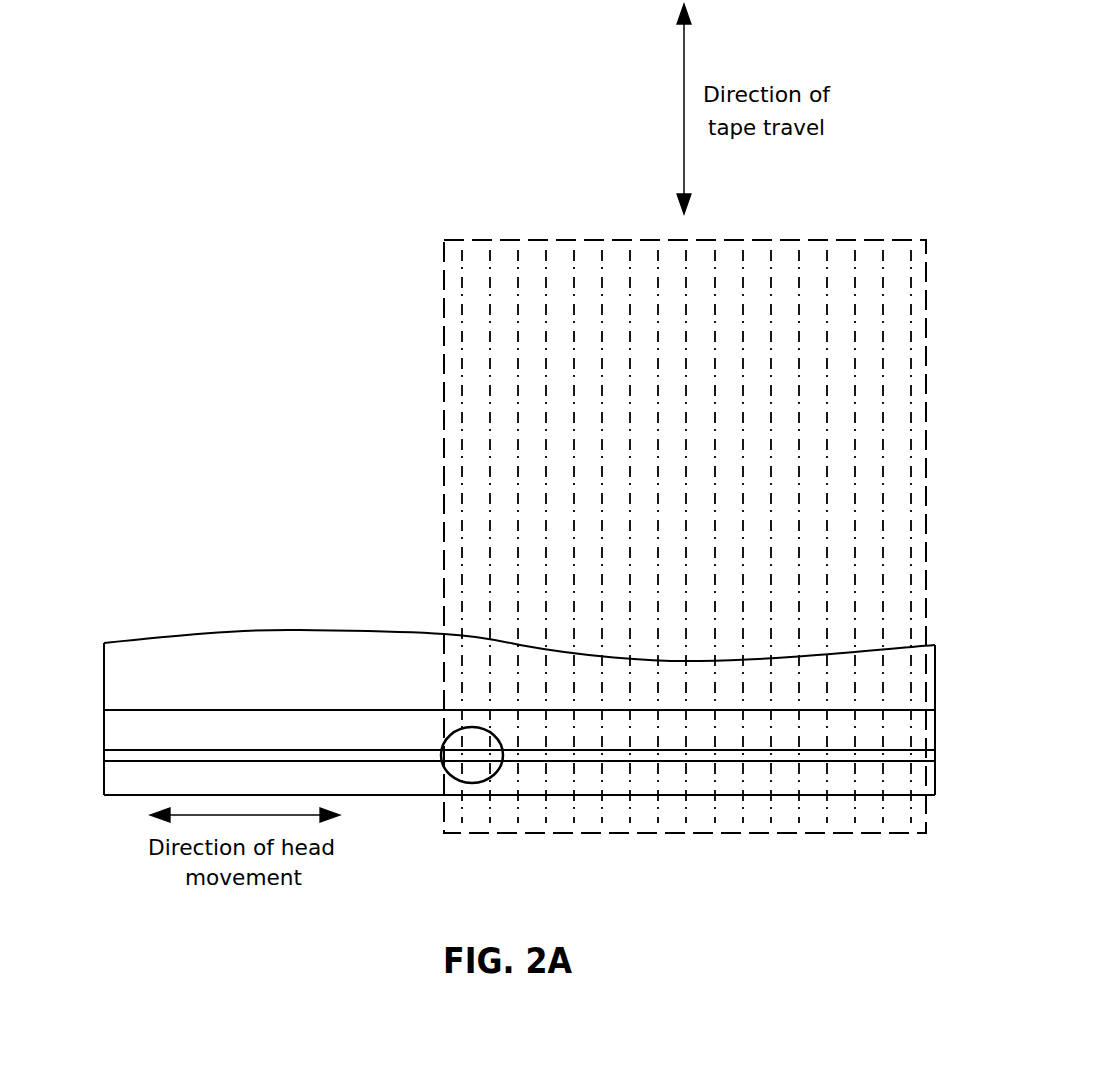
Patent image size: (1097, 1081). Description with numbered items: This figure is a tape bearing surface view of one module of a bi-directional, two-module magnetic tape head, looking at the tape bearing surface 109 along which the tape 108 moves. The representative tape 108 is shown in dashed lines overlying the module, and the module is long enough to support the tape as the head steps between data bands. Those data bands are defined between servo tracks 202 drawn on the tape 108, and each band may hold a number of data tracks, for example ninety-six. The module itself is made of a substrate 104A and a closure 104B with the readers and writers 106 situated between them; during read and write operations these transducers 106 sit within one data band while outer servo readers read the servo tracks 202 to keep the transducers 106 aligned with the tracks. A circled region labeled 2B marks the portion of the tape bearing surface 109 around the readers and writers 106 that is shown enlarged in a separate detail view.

The tape 108 is at (444, 336).
The servo tracks 202 is at (572, 463).
The substrate 104A is at (263, 631).
The closure 104B is at (104, 778).
The tape bearing surface 109 is at (335, 735).
The readers and writers 106 is at (443, 752).
The detail view region of FIG. 2B is at (482, 782).